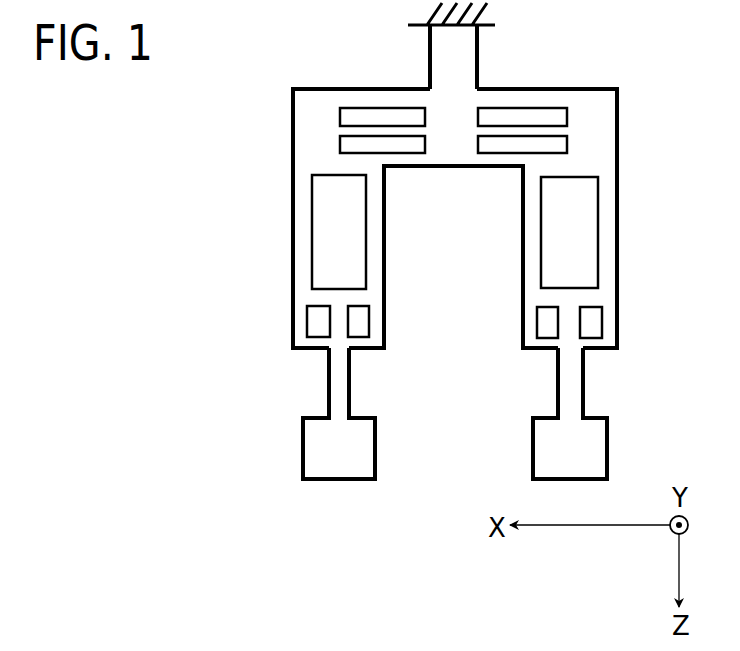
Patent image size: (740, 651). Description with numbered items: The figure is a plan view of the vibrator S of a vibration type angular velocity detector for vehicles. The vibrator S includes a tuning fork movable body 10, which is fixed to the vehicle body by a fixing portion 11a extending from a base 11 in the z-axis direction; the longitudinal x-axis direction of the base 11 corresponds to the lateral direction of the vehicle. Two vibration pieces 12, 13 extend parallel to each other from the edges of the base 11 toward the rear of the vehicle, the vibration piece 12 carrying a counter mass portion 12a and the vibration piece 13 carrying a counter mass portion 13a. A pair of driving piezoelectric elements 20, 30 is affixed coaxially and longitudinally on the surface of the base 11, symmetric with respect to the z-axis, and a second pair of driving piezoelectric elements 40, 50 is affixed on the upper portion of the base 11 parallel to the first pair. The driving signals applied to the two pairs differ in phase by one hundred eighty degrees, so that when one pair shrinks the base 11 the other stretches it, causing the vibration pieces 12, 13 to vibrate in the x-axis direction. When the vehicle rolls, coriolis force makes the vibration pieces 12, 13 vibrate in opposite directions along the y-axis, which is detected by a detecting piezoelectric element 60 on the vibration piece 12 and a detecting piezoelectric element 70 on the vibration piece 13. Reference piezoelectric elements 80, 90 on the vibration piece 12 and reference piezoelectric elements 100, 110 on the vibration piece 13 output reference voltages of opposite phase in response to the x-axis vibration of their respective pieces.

The tuning fork movable body 10 is at (457, 270).
The base 11 is at (442, 117).
The fixing portion 11a is at (462, 62).
The vibration piece 12 is at (617, 290).
The counter mass portion 12a is at (592, 452).
The vibration piece 13 is at (384, 250).
The counter mass portion 13a is at (365, 448).
The driving piezoelectric element 20 is at (497, 145).
The driving piezoelectric element 30 is at (403, 145).
The driving piezoelectric element 40 is at (552, 117).
The driving piezoelectric element 50 is at (355, 113).
The detecting piezoelectric element 60 is at (585, 222).
The detecting piezoelectric element 70 is at (320, 213).
The reference piezoelectric element 80 is at (590, 327).
The reference piezoelectric element 90 is at (547, 320).
The reference piezoelectric element 100 is at (359, 322).
The reference piezoelectric element 110 is at (317, 318).
The vibrator S is at (636, 112).